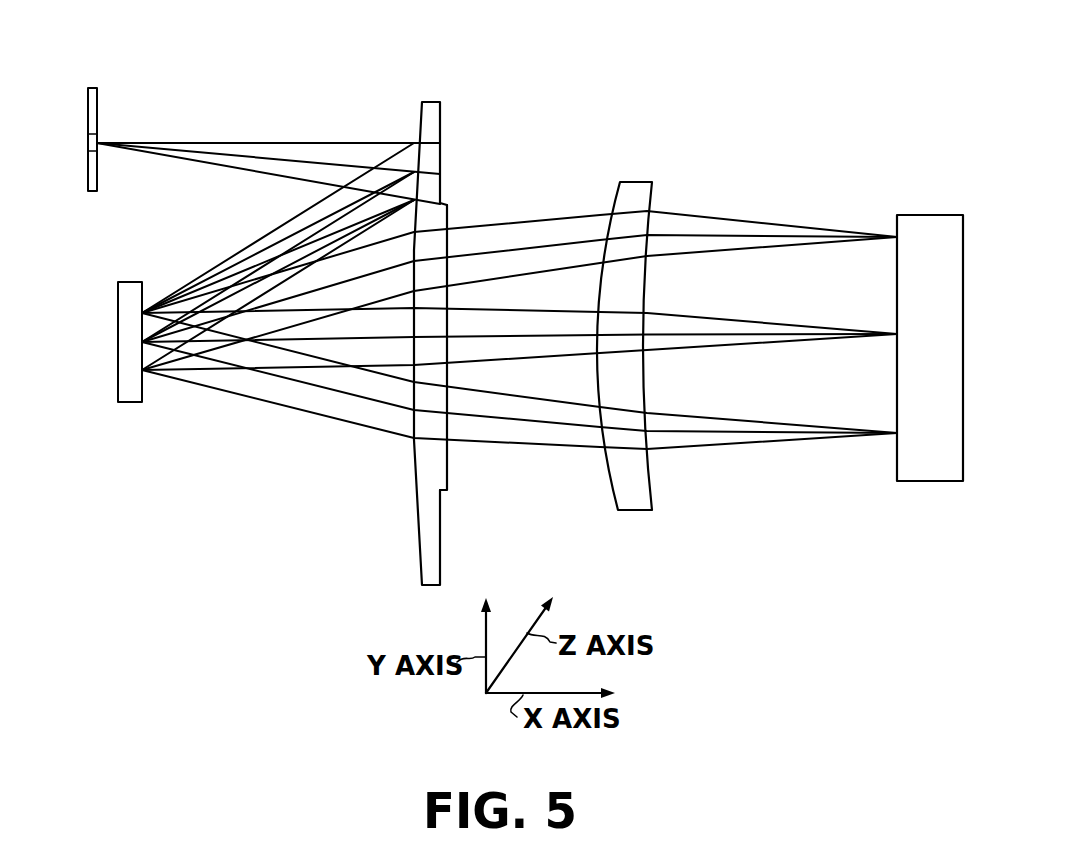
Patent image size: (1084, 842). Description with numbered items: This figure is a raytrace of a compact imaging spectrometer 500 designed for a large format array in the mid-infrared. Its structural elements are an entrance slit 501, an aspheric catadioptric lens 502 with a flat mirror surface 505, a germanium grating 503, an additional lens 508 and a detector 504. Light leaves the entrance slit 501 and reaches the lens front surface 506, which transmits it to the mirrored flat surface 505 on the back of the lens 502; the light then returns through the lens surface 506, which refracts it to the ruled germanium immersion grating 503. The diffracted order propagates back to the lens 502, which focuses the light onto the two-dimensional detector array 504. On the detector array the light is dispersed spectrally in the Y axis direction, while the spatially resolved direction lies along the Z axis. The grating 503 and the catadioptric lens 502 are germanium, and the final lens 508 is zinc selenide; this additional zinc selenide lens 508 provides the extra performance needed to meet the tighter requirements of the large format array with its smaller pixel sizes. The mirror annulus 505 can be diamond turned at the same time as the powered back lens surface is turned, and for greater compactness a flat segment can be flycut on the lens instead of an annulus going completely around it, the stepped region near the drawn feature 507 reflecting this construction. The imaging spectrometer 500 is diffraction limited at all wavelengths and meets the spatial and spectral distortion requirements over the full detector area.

The compact imaging spectrometer 500 is at (664, 41).
The entrance slit 501 is at (97, 112).
The aspheric catadioptric lens 502 is at (445, 334).
The germanium grating 503 is at (135, 403).
The detector 504 is at (920, 213).
The flat mirror surface 505 is at (442, 143).
The lens front surface 506 is at (417, 508).
The mirror step 507 is at (447, 467).
The additional lens 508 is at (633, 478).